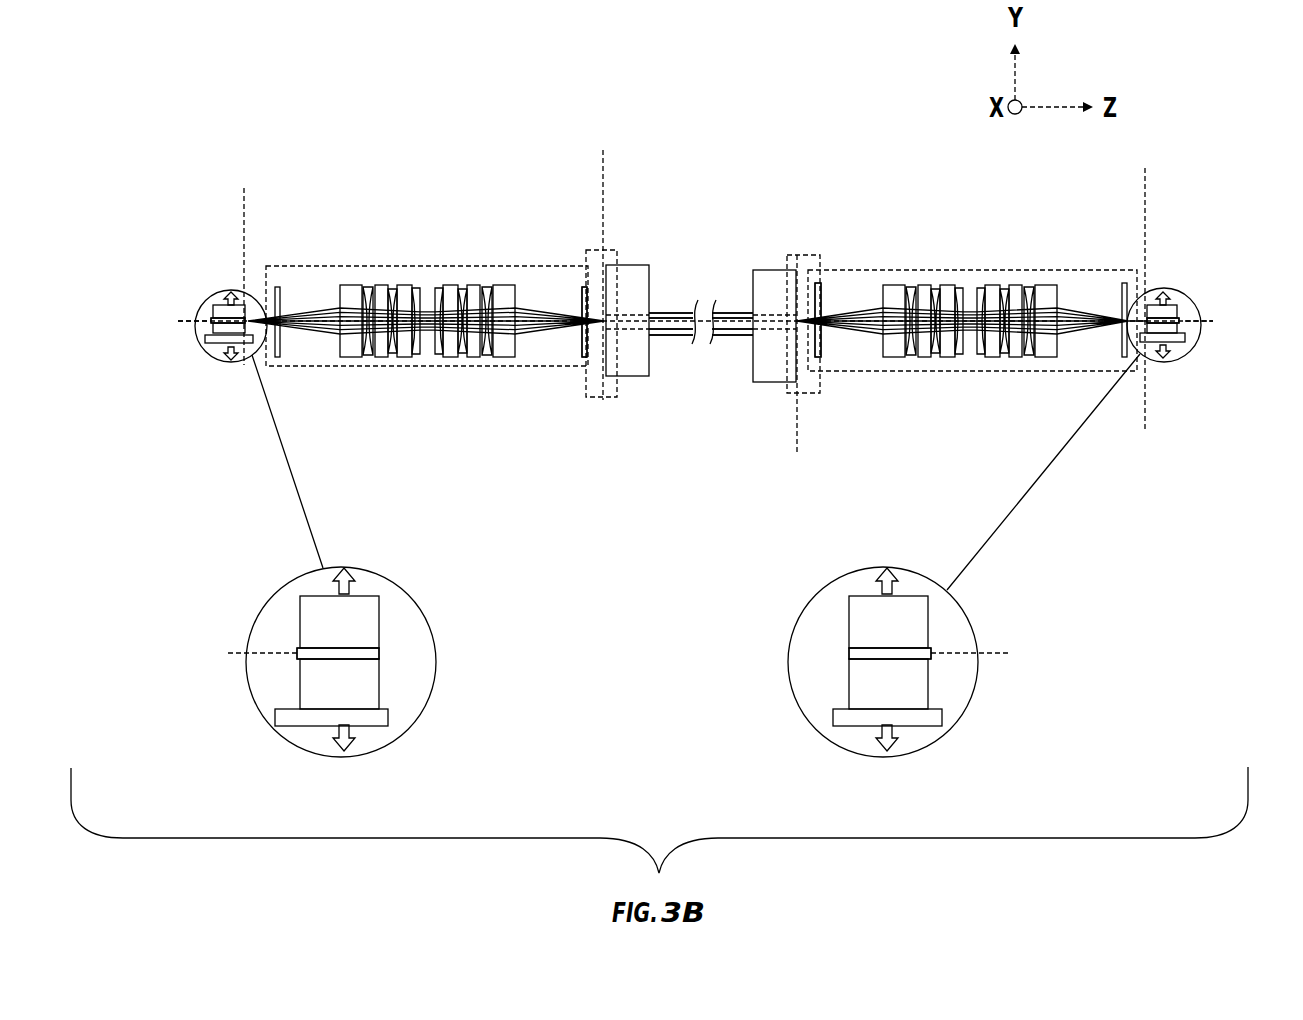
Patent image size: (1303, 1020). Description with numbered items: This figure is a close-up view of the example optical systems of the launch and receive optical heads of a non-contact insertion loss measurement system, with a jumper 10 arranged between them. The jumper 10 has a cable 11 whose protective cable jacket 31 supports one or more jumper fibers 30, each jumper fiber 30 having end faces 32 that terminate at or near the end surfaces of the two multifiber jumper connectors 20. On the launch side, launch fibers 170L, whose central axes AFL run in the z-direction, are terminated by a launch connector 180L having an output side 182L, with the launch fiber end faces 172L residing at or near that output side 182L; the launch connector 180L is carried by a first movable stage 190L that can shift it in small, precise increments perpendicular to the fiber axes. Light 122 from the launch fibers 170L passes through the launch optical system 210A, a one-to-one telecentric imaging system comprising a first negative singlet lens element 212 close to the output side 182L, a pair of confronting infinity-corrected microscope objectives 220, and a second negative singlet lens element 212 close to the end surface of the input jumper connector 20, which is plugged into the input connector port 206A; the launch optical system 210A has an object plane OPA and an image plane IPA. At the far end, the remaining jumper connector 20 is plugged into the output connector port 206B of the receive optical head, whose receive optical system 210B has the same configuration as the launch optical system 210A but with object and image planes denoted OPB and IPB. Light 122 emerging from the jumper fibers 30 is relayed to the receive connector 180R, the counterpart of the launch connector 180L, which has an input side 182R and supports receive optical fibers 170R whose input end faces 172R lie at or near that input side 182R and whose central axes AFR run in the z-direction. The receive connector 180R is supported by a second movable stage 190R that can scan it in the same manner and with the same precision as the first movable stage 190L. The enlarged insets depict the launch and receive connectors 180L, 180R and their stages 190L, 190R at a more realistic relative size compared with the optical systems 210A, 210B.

The jumper 10 is at (723, 226).
The cable 11 is at (662, 338).
The jumper connector 20 is at (622, 265).
The jumper fiber 30 is at (732, 346).
The cable jacket 31 is at (678, 313).
The end face 32 is at (582, 290).
The light 122 is at (320, 344).
The launch fiber 170L is at (223, 314).
The receive optical fiber 170R is at (1178, 320).
The end face 172L is at (380, 652).
The input end face 172R is at (848, 652).
The launch connector 180L is at (224, 306).
The receive connector 180R is at (1172, 305).
The output side 182L is at (247, 308).
The input side 182R is at (1147, 336).
The first movable stage 190L is at (226, 349).
The second movable stage 190R is at (1175, 344).
The input connector port 206A is at (612, 398).
The output connector port 206B is at (816, 395).
The launch optical system 210A is at (470, 203).
The receive optical system 210B is at (1005, 205).
The negative singlet lens element 212 is at (279, 300).
The infinity-corrected microscope objective 220 is at (390, 278).
The object plane OPA is at (245, 261).
The object plane OPB is at (796, 370).
The image plane IPA is at (604, 256).
The image plane IPB is at (1146, 283).
The central axis AFL is at (238, 656).
The central axis AFR is at (1000, 673).